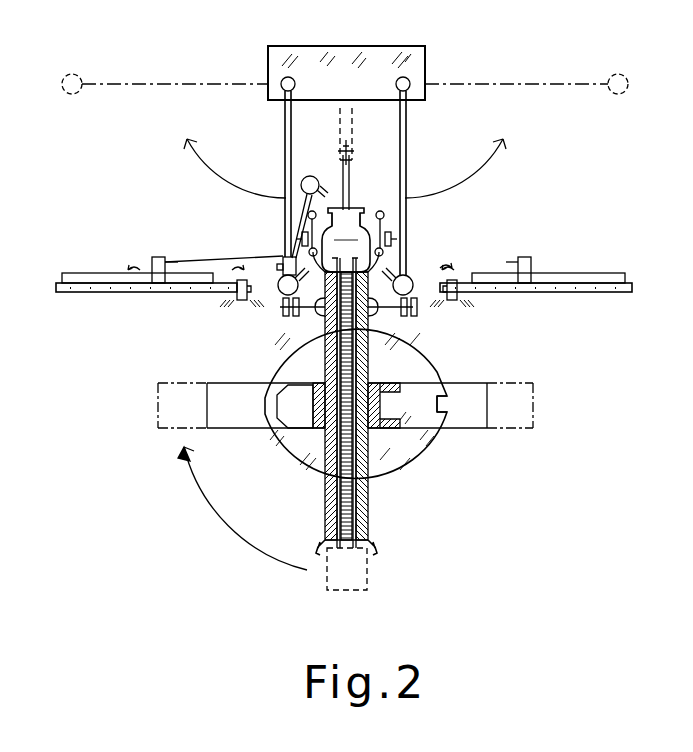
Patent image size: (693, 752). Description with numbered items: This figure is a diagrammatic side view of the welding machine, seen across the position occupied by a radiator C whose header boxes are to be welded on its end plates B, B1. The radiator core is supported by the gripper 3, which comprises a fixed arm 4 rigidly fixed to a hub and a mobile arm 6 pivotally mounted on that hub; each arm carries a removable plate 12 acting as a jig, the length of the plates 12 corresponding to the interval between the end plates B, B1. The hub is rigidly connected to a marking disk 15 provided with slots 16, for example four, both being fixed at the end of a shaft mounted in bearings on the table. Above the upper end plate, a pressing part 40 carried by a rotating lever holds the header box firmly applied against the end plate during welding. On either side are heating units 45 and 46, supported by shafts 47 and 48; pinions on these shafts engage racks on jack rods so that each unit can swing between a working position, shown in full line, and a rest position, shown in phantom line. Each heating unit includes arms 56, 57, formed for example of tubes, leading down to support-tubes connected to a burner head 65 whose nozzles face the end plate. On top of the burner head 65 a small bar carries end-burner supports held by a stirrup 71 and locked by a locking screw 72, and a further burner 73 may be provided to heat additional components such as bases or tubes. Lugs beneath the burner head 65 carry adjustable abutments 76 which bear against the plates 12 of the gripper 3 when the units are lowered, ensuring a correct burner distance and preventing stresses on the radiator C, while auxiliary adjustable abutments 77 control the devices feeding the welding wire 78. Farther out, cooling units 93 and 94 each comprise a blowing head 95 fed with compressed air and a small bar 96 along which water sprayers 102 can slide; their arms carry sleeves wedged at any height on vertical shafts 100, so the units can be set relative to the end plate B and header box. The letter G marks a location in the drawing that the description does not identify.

The gripper 3 is at (410, 471).
The fixed arm 4 is at (403, 382).
The mobile arm 6 is at (313, 430).
The plate 12 is at (332, 505).
The marking disk 15 is at (427, 448).
The slots 16 is at (442, 407).
The pressing part 40 is at (352, 152).
The heating unit 45 is at (254, 235).
The heating unit 46 is at (441, 234).
The shaft 47 is at (282, 90).
The shaft 48 is at (408, 90).
The arm 56 is at (287, 162).
The arm 57 is at (406, 164).
The burner head 65 is at (278, 294).
The stirrup 71 is at (224, 248).
The locking screw 72 is at (165, 256).
The burner 73 is at (311, 176).
The adjustable abutments 76 is at (290, 314).
The auxiliary adjustable abutments 77 is at (297, 233).
The welding wire 78 is at (380, 211).
The cooling unit 93 is at (109, 301).
The cooling unit 94 is at (581, 317).
The blowing head 95 is at (595, 290).
The small bar 96 is at (590, 270).
The shafts 100 is at (232, 298).
The water sprayers 102 is at (563, 256).
The end plate B is at (452, 251).
The end plate B1 is at (372, 552).
The radiator C is at (343, 433).
The column G is at (370, 497).